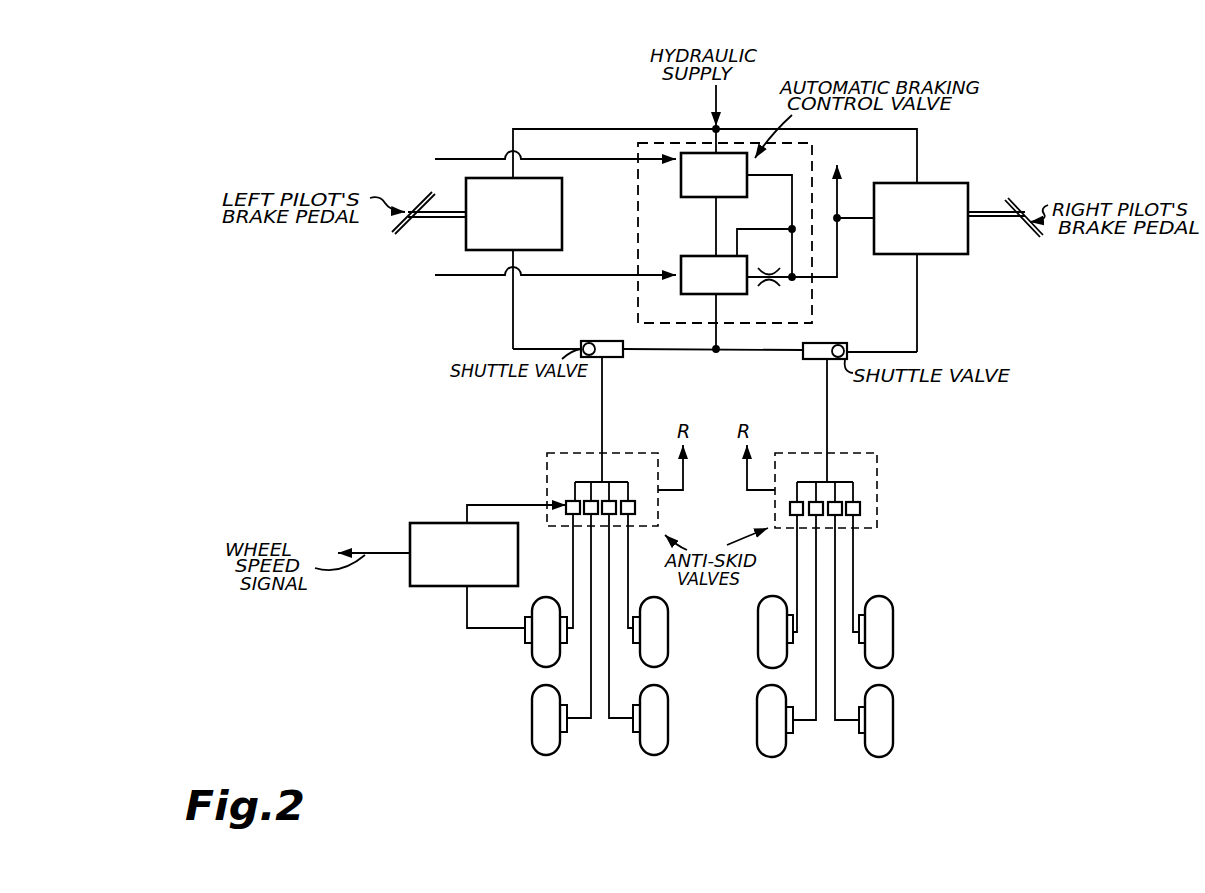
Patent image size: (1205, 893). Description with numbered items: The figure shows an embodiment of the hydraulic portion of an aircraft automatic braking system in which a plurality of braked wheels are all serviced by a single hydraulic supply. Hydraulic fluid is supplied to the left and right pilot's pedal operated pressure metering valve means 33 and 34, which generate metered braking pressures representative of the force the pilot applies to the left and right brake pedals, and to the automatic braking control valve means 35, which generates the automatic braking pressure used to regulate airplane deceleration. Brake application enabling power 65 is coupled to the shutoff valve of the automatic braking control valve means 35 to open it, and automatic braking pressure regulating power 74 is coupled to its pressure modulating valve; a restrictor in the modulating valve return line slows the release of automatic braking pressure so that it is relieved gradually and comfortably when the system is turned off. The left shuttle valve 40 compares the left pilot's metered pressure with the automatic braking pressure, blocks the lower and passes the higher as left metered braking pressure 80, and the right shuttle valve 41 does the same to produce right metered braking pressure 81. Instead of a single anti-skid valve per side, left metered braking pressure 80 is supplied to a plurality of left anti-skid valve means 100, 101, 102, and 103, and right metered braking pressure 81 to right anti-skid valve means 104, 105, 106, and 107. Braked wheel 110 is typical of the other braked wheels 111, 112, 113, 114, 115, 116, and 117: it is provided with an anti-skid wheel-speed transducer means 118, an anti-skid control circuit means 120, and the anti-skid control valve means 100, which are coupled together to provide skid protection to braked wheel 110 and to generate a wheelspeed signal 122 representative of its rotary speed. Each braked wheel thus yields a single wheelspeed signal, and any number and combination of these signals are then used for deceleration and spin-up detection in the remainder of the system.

The left pilot's pedal operated pressure metering valve means 33 is at (466, 237).
The right pilot's pedal operated pressure metering valve means 34 is at (958, 254).
The automatic braking control valve means 35 is at (813, 148).
The left shuttle valve 40 is at (615, 358).
The right shuttle valve means 41 is at (811, 360).
The brake application enabling power 65 is at (478, 157).
The automatic braking pressure regulating power 74 is at (480, 277).
The left metered braking pressure 80 is at (602, 404).
The right metered braking pressure 81 is at (827, 410).
The left anti-skid valve means 100 is at (566, 503).
The left anti-skid valve means 101 is at (588, 516).
The left anti-skid valve means 102 is at (612, 516).
The left anti-skid valve means 103 is at (637, 507).
The right anti-skid valve means 104 is at (790, 507).
The right anti-skid valve means 105 is at (815, 516).
The right anti-skid valve means 106 is at (836, 516).
The right anti-skid valve means 107 is at (860, 508).
The braked wheel 110 is at (552, 664).
The braked wheel 111 is at (555, 755).
The braked wheel 112 is at (663, 755).
The braked wheel 113 is at (665, 663).
The braked wheel 114 is at (760, 600).
The braked wheel 115 is at (760, 755).
The braked wheel 116 is at (890, 750).
The braked wheel 117 is at (892, 600).
The anti-skid wheel-speed transducer means 118 is at (525, 643).
The anti-skid control circuit means 120 is at (428, 586).
The wheelspeed signal 122 is at (382, 552).